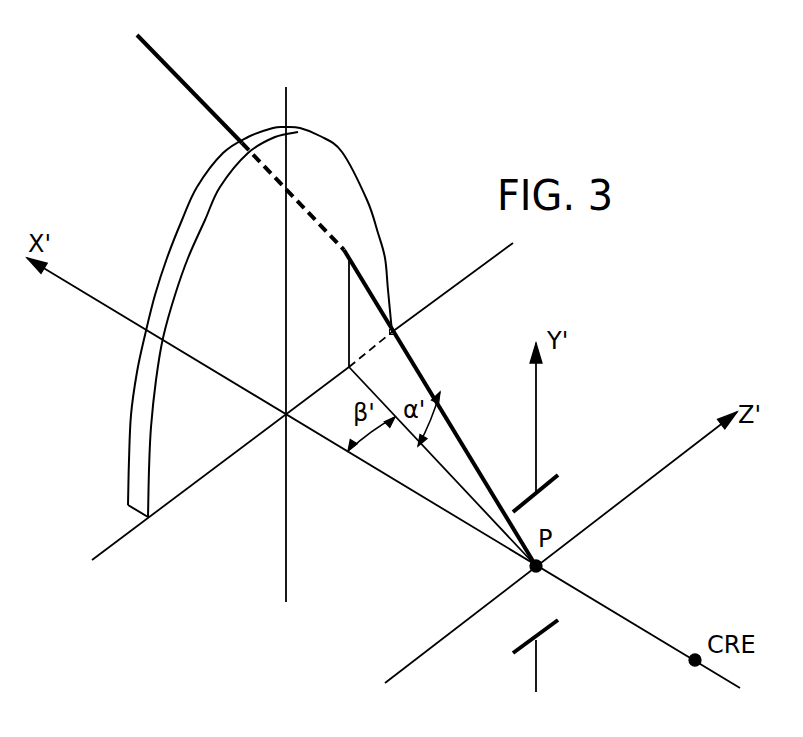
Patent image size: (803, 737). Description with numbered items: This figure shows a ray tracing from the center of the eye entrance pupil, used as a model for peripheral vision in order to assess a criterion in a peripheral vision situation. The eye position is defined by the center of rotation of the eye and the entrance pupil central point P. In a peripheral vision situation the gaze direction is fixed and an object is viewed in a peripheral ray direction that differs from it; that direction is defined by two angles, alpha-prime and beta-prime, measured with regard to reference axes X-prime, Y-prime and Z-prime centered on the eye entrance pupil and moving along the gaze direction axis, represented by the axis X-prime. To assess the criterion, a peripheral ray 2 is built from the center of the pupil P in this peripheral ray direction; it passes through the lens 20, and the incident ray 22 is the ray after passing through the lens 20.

The peripheral ray 2 is at (458, 435).
The lens 20 is at (342, 152).
The incident ray 22 is at (167, 62).